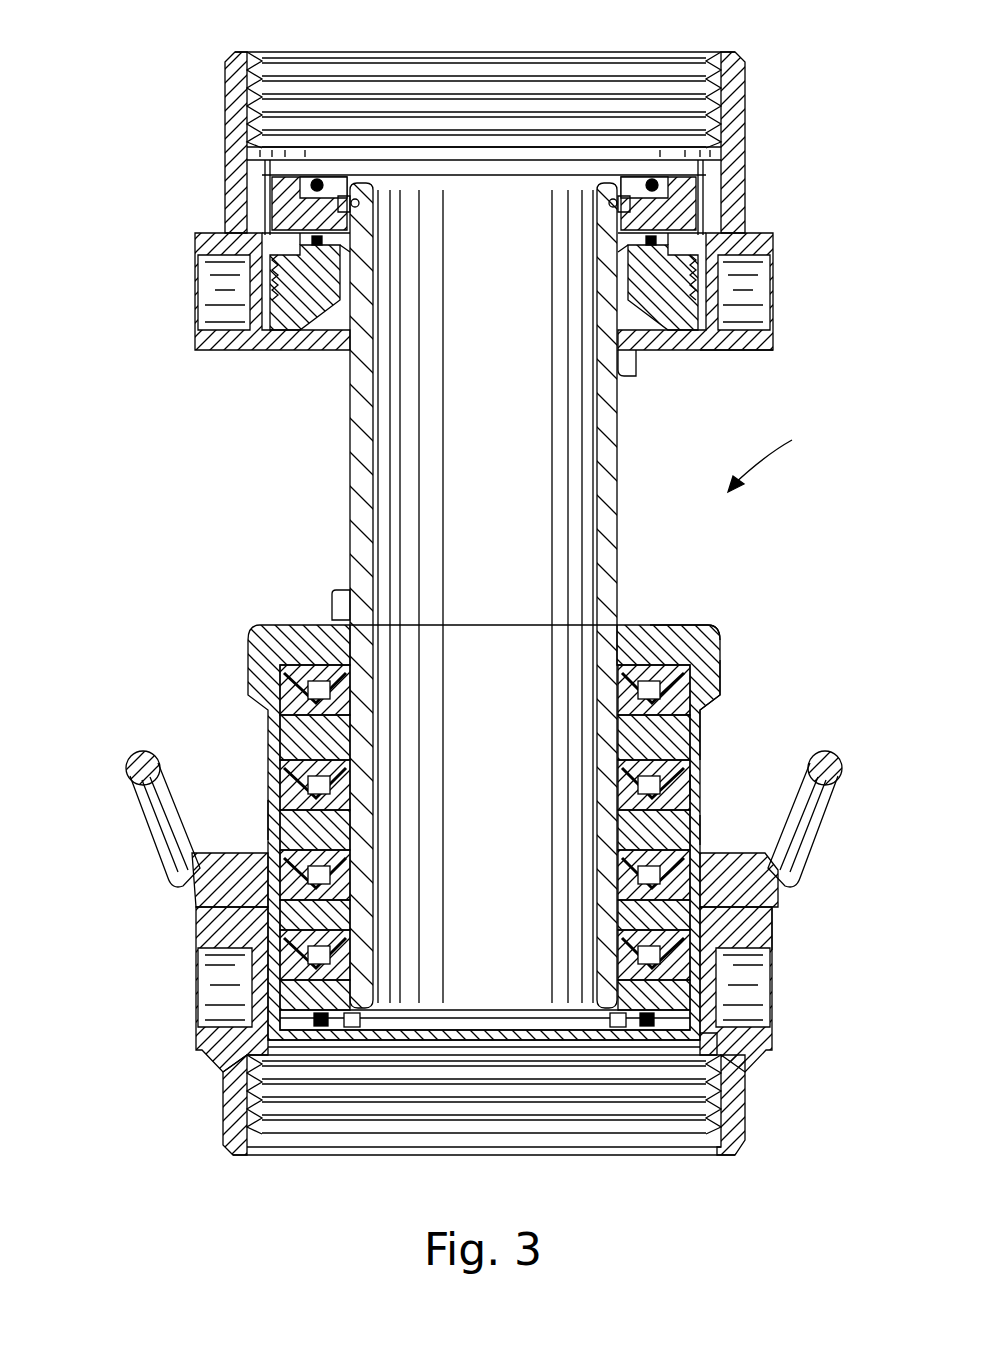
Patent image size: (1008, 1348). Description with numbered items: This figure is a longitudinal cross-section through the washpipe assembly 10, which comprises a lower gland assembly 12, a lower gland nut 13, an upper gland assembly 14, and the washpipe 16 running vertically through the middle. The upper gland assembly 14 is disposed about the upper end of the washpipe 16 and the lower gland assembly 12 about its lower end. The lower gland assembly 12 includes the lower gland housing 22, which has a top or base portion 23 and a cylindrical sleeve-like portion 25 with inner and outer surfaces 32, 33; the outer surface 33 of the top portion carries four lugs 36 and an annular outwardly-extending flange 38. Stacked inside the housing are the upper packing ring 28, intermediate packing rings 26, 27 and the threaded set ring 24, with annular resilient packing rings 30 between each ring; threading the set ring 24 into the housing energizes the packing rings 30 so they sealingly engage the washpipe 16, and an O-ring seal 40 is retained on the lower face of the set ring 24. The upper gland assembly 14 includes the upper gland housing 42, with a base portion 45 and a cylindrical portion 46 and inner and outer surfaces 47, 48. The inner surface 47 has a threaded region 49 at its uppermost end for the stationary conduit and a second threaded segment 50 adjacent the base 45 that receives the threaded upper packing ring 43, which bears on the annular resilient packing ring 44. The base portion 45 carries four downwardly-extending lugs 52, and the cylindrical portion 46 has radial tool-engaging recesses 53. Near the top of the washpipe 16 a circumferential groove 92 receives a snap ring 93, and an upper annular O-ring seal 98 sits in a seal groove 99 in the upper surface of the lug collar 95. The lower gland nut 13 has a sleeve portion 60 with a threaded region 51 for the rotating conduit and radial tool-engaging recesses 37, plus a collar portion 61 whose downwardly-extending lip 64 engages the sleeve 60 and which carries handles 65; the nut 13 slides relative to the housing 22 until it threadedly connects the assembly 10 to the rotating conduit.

The washpipe assembly 10 is at (786, 453).
The lower gland assembly 12 is at (718, 665).
The lower gland nut 13 is at (762, 946).
The upper gland assembly 14 is at (750, 202).
The washpipe 16 is at (625, 532).
The lower gland housing 22 is at (702, 748).
The top or base portion 23 is at (668, 627).
The threaded set ring 24 is at (296, 989).
The cylindrical sleeve-like portion 25 is at (702, 785).
The intermediate packing ring 26 is at (282, 918).
The intermediate packing ring 27 is at (270, 822).
The upper packing ring 28 is at (258, 688).
The annular resilient packing rings 30 is at (250, 630).
The inner surface 32 is at (686, 797).
The outer surface 33 is at (702, 833).
The lugs 36 is at (335, 600).
The radial tool-engaging recesses 37 is at (200, 990).
The annular outwardly-extending flange 38 is at (776, 876).
The O-ring seal 40 is at (312, 1046).
The upper gland housing 42 is at (775, 230).
The threaded upper packing ring 43 is at (693, 280).
The annular resilient packing ring 44 is at (660, 318).
The base portion 45 is at (760, 350).
The cylindrical portion 46 is at (747, 112).
The inner surface 47 is at (225, 233).
The outer surface 48 is at (223, 112).
The threaded region 49 is at (252, 62).
The second threaded segment 50 is at (298, 322).
The threaded region 51 is at (706, 1122).
The downwardly-extending lugs 52 is at (628, 375).
The radial tool-engaging recesses 53 is at (762, 308).
The sleeve portion 60 is at (750, 1112).
The collar portion 61 is at (248, 854).
The downwardly-extending flange or lip 64 is at (776, 926).
The handle or grasping member 65 is at (133, 812).
The circumferential groove 92 is at (652, 178).
The snap ring 93 is at (612, 206).
The lug collar 95 is at (740, 185).
The upper annular O-ring seal 98 is at (318, 178).
The seal groove 99 is at (300, 212).